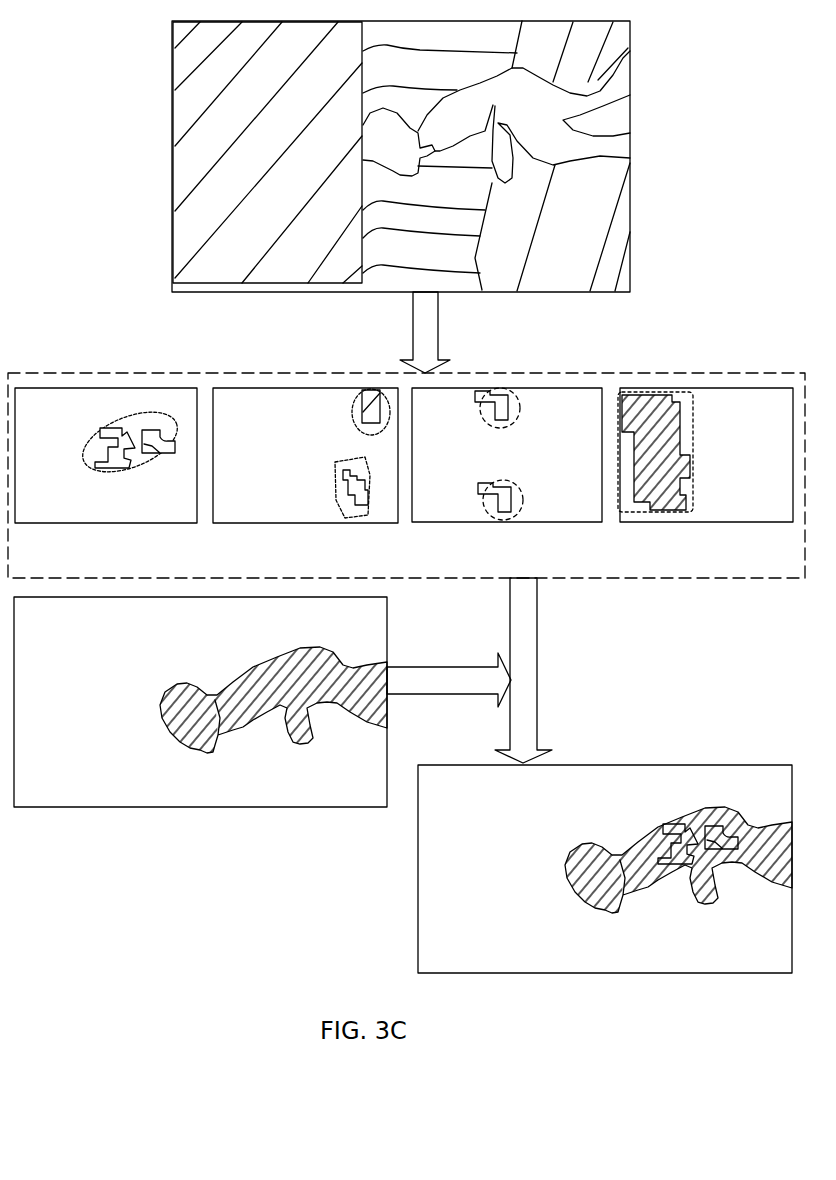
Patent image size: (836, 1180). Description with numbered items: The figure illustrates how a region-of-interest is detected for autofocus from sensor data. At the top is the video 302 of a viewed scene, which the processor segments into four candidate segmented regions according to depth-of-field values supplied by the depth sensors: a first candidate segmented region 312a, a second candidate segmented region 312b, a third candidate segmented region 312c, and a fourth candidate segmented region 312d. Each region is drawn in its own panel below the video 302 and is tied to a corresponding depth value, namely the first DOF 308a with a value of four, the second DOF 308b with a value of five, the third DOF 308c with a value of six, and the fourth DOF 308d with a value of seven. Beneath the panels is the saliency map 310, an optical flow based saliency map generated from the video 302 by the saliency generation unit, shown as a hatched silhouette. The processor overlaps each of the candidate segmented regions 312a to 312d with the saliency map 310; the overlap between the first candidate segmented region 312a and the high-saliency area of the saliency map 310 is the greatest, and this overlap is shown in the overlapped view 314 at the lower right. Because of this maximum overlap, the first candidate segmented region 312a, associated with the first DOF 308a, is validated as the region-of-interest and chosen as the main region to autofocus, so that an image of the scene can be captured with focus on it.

The video 302 is at (630, 110).
The first DOF 308a is at (125, 475).
The second DOF 308b is at (370, 432).
The third DOF 308c is at (482, 425).
The fourth DOF 308d is at (657, 517).
The first candidate segmented region 312a is at (150, 433).
The second candidate segmented region 312b is at (353, 470).
The third candidate segmented region 312c is at (507, 487).
The fourth candidate segmented region 312d is at (660, 415).
The saliency map 310 is at (200, 745).
The overlapped view 314 is at (648, 798).